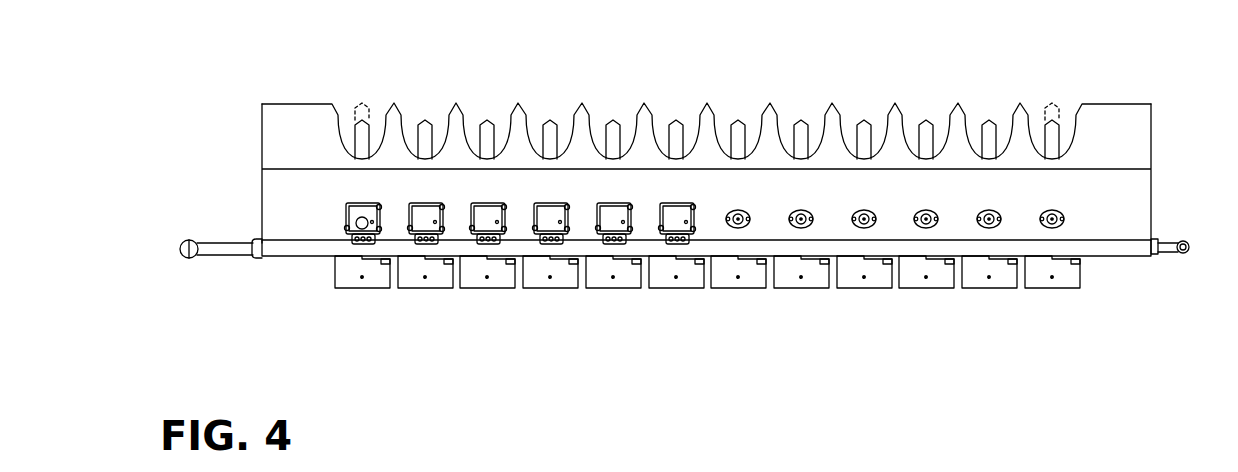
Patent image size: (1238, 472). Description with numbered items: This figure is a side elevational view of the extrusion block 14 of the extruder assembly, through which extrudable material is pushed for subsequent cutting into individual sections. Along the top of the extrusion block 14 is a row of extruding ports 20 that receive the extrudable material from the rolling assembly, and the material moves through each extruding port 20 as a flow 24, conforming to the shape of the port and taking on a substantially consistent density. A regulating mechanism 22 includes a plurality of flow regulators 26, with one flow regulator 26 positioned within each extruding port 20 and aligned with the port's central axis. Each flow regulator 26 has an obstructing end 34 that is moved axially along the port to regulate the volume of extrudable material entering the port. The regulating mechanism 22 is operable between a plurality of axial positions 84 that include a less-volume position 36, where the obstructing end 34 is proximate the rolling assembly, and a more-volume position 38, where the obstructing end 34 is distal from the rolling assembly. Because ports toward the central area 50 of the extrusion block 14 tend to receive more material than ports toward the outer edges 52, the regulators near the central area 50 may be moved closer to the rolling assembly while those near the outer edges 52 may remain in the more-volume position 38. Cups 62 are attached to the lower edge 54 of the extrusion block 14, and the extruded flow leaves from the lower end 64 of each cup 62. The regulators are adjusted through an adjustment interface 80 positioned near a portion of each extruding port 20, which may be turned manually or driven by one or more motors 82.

The extrusion block 14 is at (255, 143).
The extruding port 20 is at (352, 103).
The regulating mechanism 22 is at (606, 110).
The flow 24 is at (738, 97).
The flow regulator 26 is at (800, 142).
The obstructing end 34 is at (866, 118).
The less-volume position 36 is at (1067, 100).
The more-volume position 38 is at (362, 103).
The central area 50 is at (680, 297).
The outer edges 52 is at (345, 305).
The lower edge 54 is at (1118, 256).
The cup 62 is at (1068, 282).
The lower end 64 is at (938, 295).
The adjustment interface 80 is at (340, 208).
The motor 82 is at (356, 226).
The plurality of axial positions 84 is at (1048, 102).